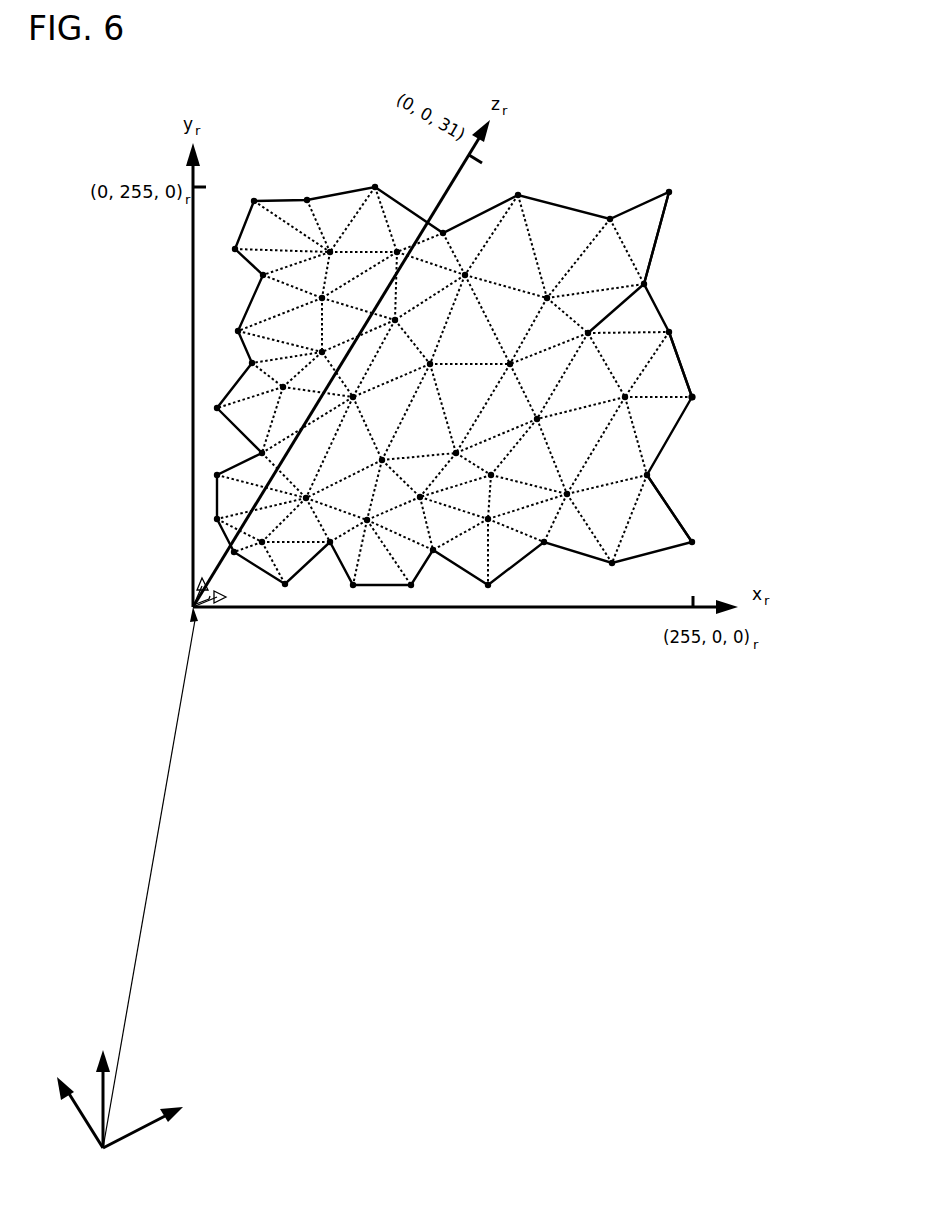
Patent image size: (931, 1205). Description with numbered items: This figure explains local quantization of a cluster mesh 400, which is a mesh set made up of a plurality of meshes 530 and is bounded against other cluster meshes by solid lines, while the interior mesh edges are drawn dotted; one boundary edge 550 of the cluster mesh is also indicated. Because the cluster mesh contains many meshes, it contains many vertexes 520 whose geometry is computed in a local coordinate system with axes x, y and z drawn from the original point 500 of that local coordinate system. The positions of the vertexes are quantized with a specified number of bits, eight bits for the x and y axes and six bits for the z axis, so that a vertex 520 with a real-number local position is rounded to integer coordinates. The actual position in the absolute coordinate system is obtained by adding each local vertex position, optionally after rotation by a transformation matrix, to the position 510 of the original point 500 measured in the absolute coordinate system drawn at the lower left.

The cluster mesh 400 is at (657, 118).
The original point of the local coordinate system 500 is at (133, 590).
The position of the original point 510 is at (262, 705).
The vertex 520 is at (694, 396).
The mesh 530 is at (672, 331).
The mesh boundary edge 550 is at (660, 229).